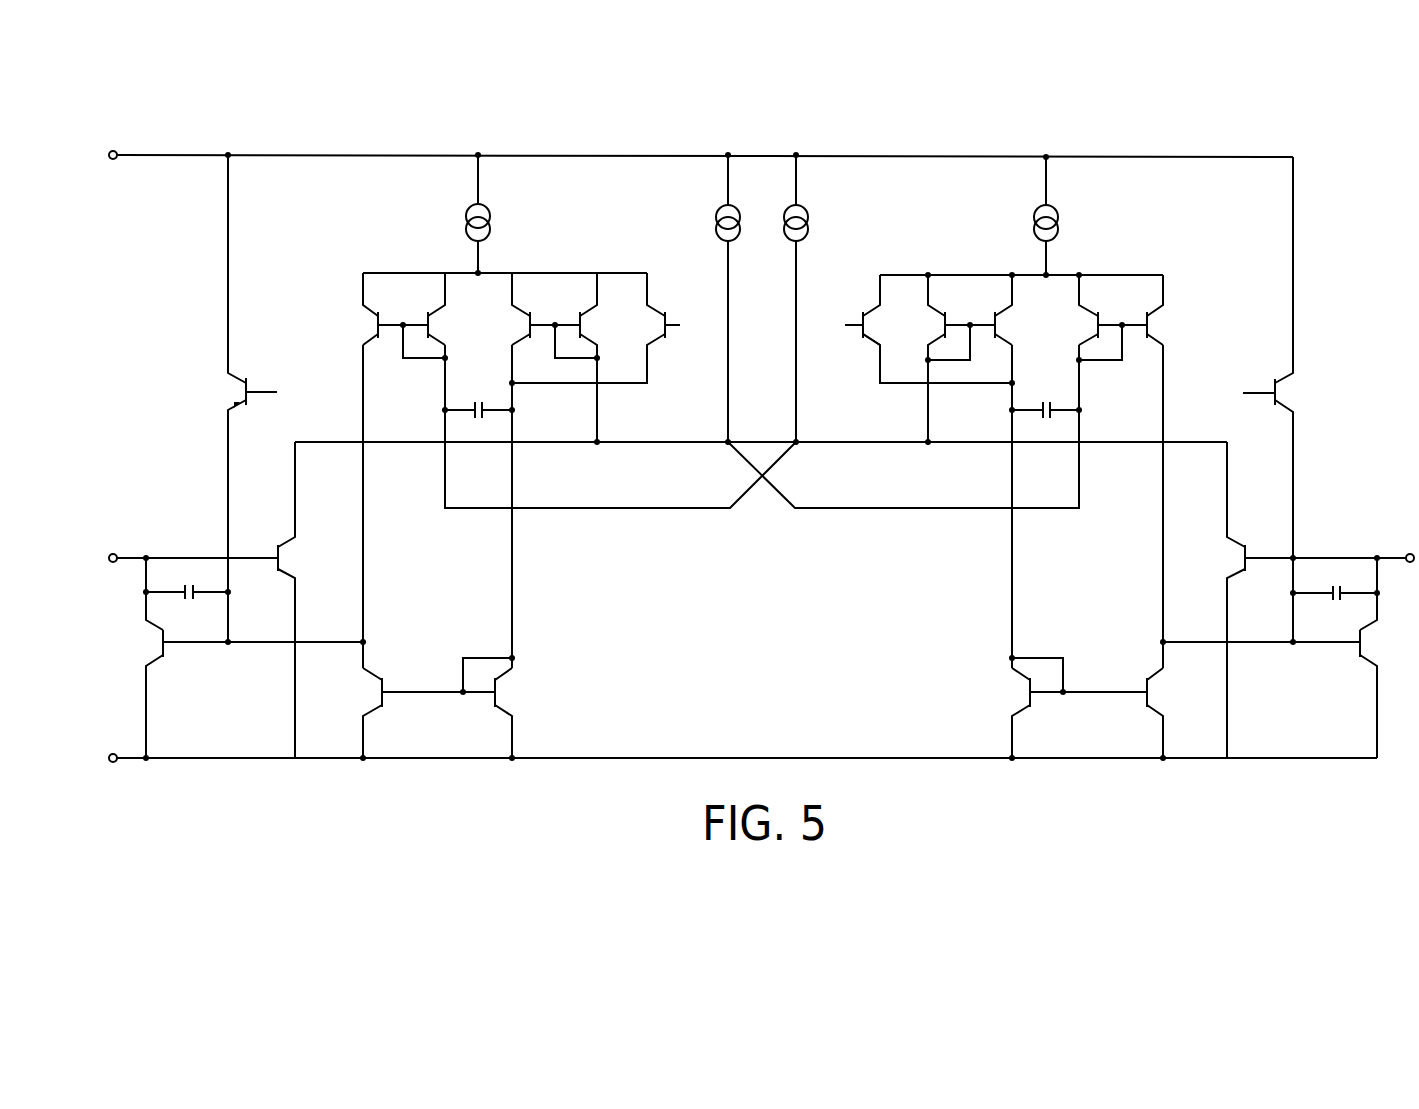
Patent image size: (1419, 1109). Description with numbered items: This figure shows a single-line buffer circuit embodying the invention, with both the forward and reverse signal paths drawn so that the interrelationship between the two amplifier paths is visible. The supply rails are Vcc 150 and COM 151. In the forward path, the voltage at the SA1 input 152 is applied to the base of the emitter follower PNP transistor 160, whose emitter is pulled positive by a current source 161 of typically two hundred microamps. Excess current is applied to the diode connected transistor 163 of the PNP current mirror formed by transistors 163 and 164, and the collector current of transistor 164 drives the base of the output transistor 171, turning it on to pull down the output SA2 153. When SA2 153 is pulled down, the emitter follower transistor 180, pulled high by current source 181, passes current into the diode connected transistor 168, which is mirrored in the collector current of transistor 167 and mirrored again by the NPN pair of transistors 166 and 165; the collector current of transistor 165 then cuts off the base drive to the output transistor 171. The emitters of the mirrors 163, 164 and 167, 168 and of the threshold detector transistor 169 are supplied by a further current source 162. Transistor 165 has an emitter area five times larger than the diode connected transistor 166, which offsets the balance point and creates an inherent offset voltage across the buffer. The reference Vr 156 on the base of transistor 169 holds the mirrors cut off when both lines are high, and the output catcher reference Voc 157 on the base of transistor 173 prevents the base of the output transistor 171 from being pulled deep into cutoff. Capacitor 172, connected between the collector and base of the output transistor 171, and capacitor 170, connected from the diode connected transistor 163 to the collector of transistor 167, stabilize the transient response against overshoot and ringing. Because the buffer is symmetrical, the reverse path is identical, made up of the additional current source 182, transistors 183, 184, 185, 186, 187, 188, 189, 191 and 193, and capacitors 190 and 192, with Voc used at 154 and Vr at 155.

The Vcc supply rail 150 is at (148, 140).
The COM supply rail 151 is at (168, 768).
The SA1 input 152 is at (158, 548).
The SA2 output 153 is at (1340, 552).
The Voc reference connection 154 is at (308, 364).
The Vr reference connection 155 is at (684, 338).
The Vr reference 156 is at (846, 332).
The Voc output catcher reference 157 is at (1246, 384).
The emitter follower PNP transistor 160 is at (292, 555).
The current source 161 is at (704, 224).
The current source 162 is at (1024, 228).
The diode connected transistor 163 is at (1104, 336).
The PNP transistor 164 is at (1152, 325).
The NPN transistor 165 is at (1135, 698).
The diode connected NPN transistor 166 is at (1038, 698).
The transistor 167 is at (1000, 325).
The diode connected transistor 168 is at (963, 310).
The threshold detector transistor 169 is at (880, 326).
The capacitor 170 is at (1048, 432).
The output transistor 171 is at (1352, 652).
The capacitor 172 is at (1340, 614).
The transistor 173 is at (1288, 398).
The emitter follower transistor 180 is at (1234, 557).
The current source 181 is at (812, 220).
The current source 182 is at (460, 226).
The transistor 183 is at (440, 326).
The transistor 184 is at (374, 320).
The transistor 185 is at (410, 712).
The transistor 186 is at (480, 698).
The transistor 187 is at (520, 328).
The transistor 188 is at (569, 317).
The transistor 189 is at (666, 306).
The capacitor 190 is at (468, 406).
The transistor 191 is at (170, 652).
The capacitor 192 is at (175, 596).
The transistor 193 is at (230, 392).